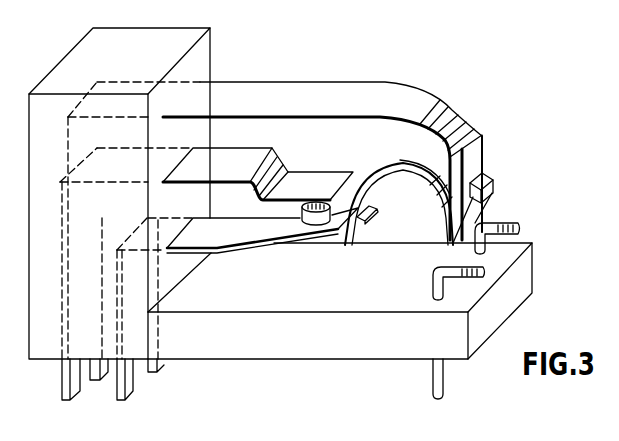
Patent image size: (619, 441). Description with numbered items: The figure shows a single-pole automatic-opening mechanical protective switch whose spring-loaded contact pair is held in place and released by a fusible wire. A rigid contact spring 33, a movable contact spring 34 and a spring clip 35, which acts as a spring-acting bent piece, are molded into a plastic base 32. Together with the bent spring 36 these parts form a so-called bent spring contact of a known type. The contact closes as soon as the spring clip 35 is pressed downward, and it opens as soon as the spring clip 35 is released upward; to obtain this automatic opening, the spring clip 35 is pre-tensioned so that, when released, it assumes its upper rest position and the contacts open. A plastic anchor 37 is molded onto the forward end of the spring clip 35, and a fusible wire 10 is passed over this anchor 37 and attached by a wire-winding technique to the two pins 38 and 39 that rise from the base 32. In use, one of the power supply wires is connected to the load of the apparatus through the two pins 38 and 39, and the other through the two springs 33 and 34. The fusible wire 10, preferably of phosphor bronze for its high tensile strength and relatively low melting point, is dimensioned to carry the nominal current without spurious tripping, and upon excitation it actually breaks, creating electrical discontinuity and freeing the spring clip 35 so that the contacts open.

The fusible wire 10 is at (495, 205).
The plastic base 32 is at (328, 340).
The rigid contact spring 33 is at (248, 158).
The movable contact spring 34 is at (273, 228).
The spring clip 35 is at (329, 93).
The bent spring 36 is at (412, 172).
The plastic anchor 37 is at (476, 152).
The pin 38 is at (520, 243).
The pin 39 is at (453, 283).